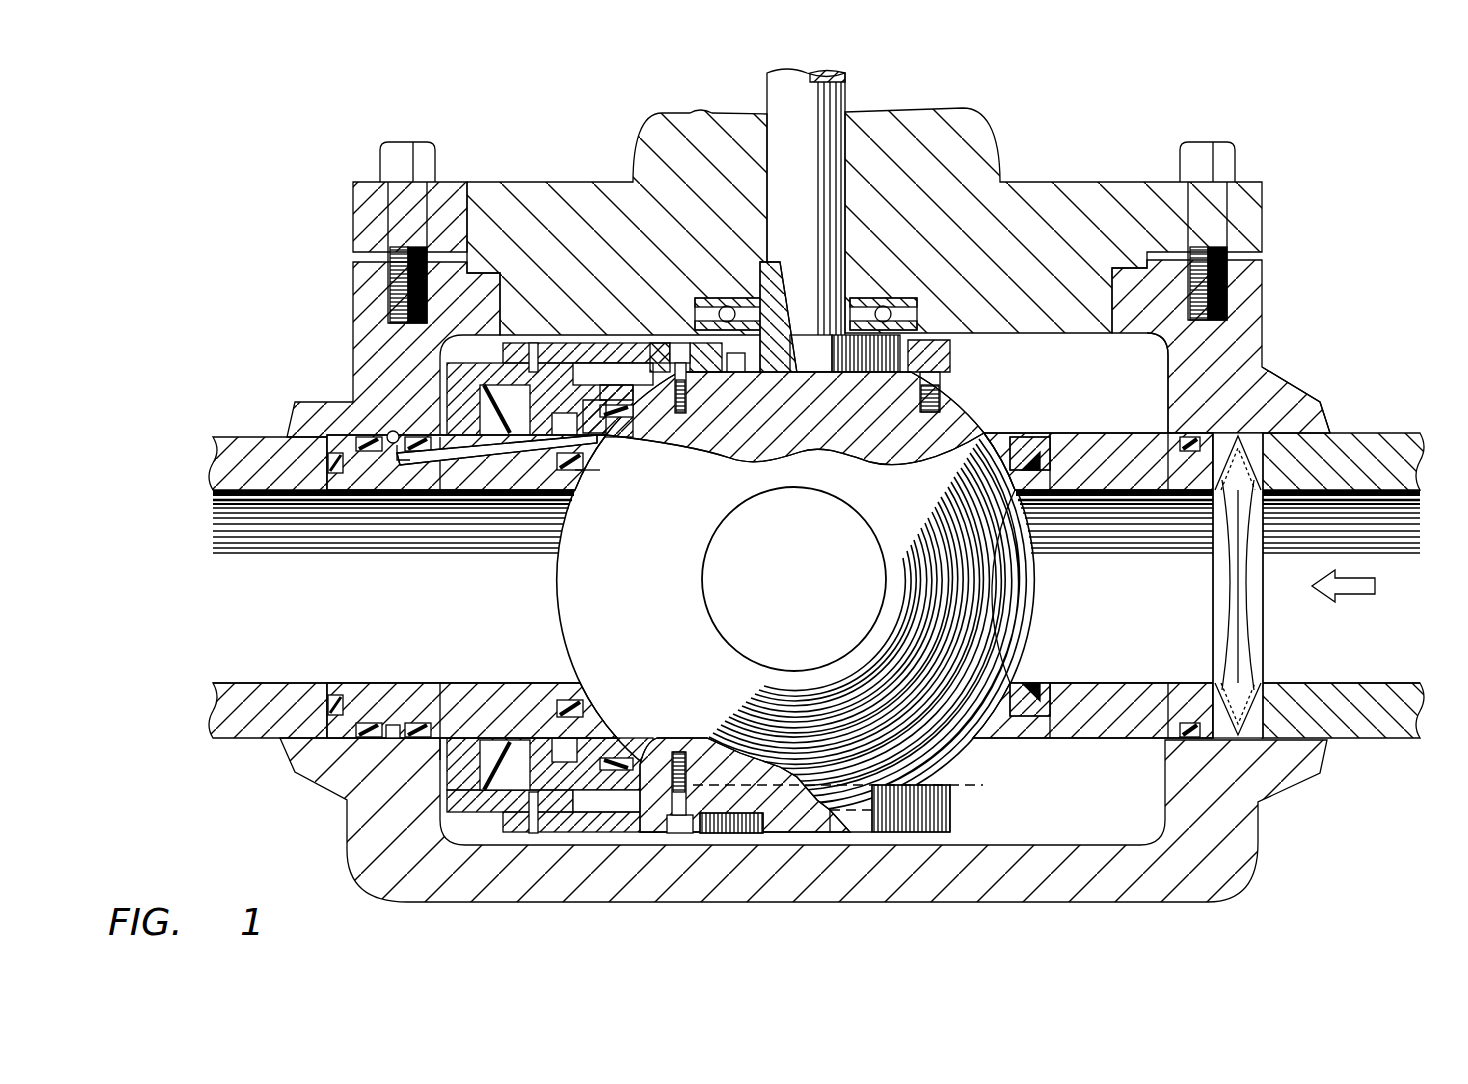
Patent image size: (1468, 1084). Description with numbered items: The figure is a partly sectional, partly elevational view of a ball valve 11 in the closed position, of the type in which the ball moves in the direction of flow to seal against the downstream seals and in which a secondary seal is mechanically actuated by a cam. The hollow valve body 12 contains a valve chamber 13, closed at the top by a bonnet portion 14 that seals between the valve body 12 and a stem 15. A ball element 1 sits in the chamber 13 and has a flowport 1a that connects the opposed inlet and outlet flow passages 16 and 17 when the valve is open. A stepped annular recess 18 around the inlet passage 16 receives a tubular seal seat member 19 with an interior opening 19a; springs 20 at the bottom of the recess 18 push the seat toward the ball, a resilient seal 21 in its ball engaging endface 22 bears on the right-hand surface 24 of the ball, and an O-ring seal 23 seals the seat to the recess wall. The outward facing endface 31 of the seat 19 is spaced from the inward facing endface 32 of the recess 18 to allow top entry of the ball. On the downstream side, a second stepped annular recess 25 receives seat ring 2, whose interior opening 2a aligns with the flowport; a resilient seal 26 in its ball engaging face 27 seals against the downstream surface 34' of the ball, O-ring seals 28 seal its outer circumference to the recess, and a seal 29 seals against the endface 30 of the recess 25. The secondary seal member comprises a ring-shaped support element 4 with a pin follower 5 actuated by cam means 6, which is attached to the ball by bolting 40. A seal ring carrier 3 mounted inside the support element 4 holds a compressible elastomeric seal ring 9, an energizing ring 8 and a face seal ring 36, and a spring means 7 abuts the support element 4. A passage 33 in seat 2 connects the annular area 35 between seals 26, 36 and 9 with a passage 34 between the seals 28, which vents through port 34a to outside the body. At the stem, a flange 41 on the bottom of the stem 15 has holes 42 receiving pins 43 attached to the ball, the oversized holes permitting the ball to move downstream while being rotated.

The ball element 1 is at (558, 585).
The flowport 1a is at (706, 583).
The seat ring 2 is at (500, 500).
The interior opening 2a is at (390, 683).
The seal ring carrier 3 is at (615, 345).
The ring-shaped support element 4 is at (460, 377).
The pin follower 5 is at (532, 345).
The cam means 6 is at (582, 345).
The spring means 7 is at (524, 747).
The energizing ring 8 is at (544, 748).
The compressible elastomeric seal ring 9 is at (558, 748).
The ball valve 11 is at (1326, 197).
The valve body 12 is at (1263, 290).
The valve chamber 13 is at (1165, 377).
The bonnet portion 14 is at (1038, 182).
The stem 15 is at (767, 92).
The inlet flow passage 16 is at (1348, 681).
The outlet flow passage 17 is at (250, 681).
The stepped annular recess 18 is at (1258, 442).
The seal seat member 19 is at (1107, 498).
The interior opening 19a is at (1078, 681).
The spring 20 is at (1233, 455).
The resilient seal 21 is at (1022, 445).
The ball engaging endface 22 is at (997, 480).
The O-ring seal 23 is at (1185, 438).
The right-hand surface 24 is at (983, 452).
The second stepped annular recess 25 is at (436, 740).
The resilient seal 26 is at (582, 468).
The ball engaging face 27 is at (578, 485).
The seals 28 is at (388, 500).
The seal 29 is at (327, 712).
The endface 30 is at (345, 695).
The outward facing endface 31 is at (1215, 657).
The inward facing endface 32 is at (1240, 620).
The passage 33 is at (452, 500).
The passage 34 is at (424, 414).
The port 34a is at (397, 433).
The downstream surface 34' is at (626, 472).
The annular area 35 is at (595, 450).
The face seal ring 36 is at (615, 430).
The bolting 40 is at (679, 345).
The flange 41 is at (833, 380).
The holes 42 is at (747, 350).
The pins 43 is at (680, 350).